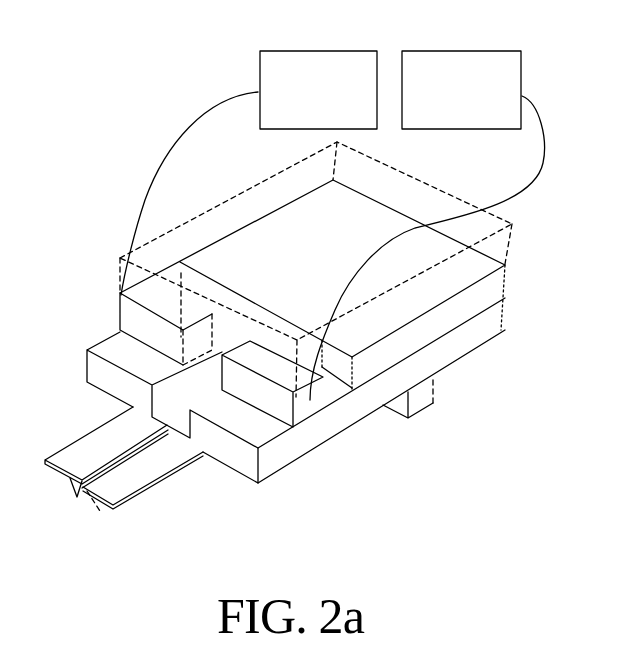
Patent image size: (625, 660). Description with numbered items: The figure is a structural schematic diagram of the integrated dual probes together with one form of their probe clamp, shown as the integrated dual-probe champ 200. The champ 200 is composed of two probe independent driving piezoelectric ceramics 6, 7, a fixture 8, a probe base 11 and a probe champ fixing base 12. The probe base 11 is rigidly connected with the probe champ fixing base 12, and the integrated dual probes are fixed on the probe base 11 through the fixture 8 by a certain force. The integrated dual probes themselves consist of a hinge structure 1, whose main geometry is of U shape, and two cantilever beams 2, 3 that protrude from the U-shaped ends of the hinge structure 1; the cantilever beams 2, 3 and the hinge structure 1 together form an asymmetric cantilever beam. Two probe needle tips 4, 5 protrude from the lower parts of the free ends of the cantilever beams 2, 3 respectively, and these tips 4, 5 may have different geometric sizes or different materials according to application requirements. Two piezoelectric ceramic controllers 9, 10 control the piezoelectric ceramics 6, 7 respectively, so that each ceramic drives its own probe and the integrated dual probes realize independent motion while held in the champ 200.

The integrated dual-probe champ 200 is at (115, 222).
The hinge structure 1 is at (357, 413).
The probe cantilever beam 2 is at (82, 452).
The probe cantilever beam 3 is at (153, 477).
The probe tip 4 is at (72, 493).
The probe tip 5 is at (98, 505).
The piezoelectric ceramic 6 is at (128, 313).
The piezoelectric ceramic 7 is at (302, 413).
The fixture 8 is at (420, 400).
The piezoelectric ceramic controller 9 is at (268, 62).
The piezoelectric ceramic controller 10 is at (443, 60).
The probe base 11 is at (493, 285).
The probe champ fixing base 12 is at (505, 243).